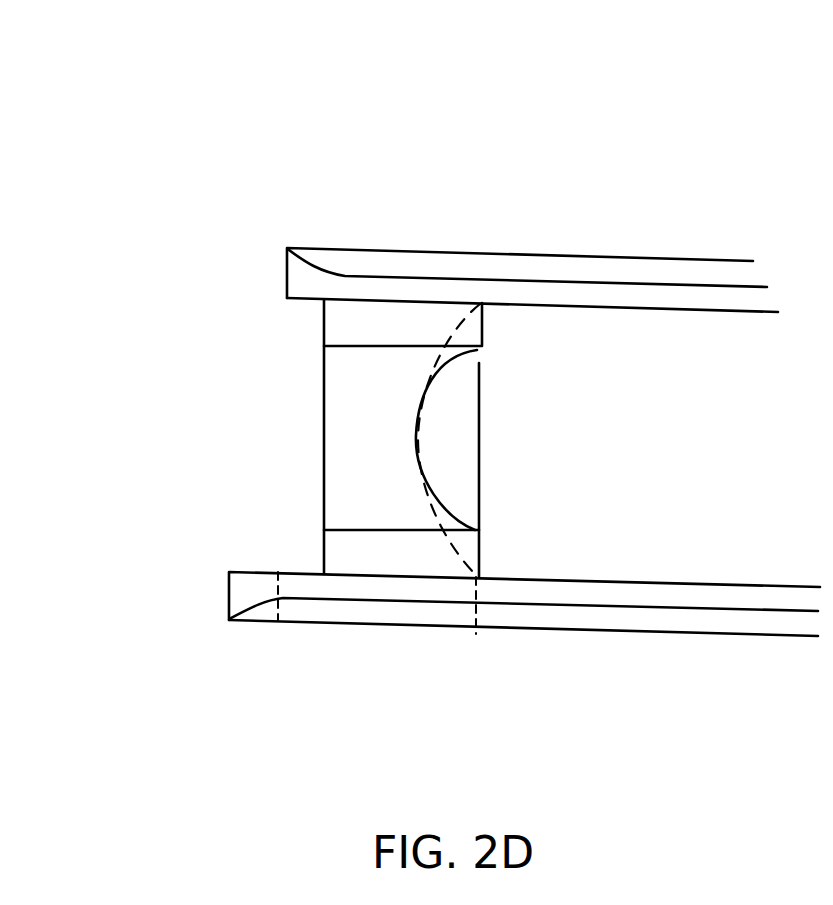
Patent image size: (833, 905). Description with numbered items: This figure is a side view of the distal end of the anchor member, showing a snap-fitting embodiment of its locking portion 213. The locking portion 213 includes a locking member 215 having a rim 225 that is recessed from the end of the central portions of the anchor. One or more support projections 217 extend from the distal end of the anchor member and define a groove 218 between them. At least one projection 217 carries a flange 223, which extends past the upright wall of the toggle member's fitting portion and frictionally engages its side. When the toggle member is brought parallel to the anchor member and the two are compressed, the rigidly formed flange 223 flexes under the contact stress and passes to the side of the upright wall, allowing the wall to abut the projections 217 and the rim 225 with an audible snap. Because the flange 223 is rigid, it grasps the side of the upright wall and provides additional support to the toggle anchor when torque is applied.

The locking portion 213 is at (305, 100).
The locking member 215 is at (322, 430).
The support projection 217 is at (317, 300).
The groove 218 is at (242, 470).
The flange 223 is at (247, 623).
The rim 225 is at (418, 440).